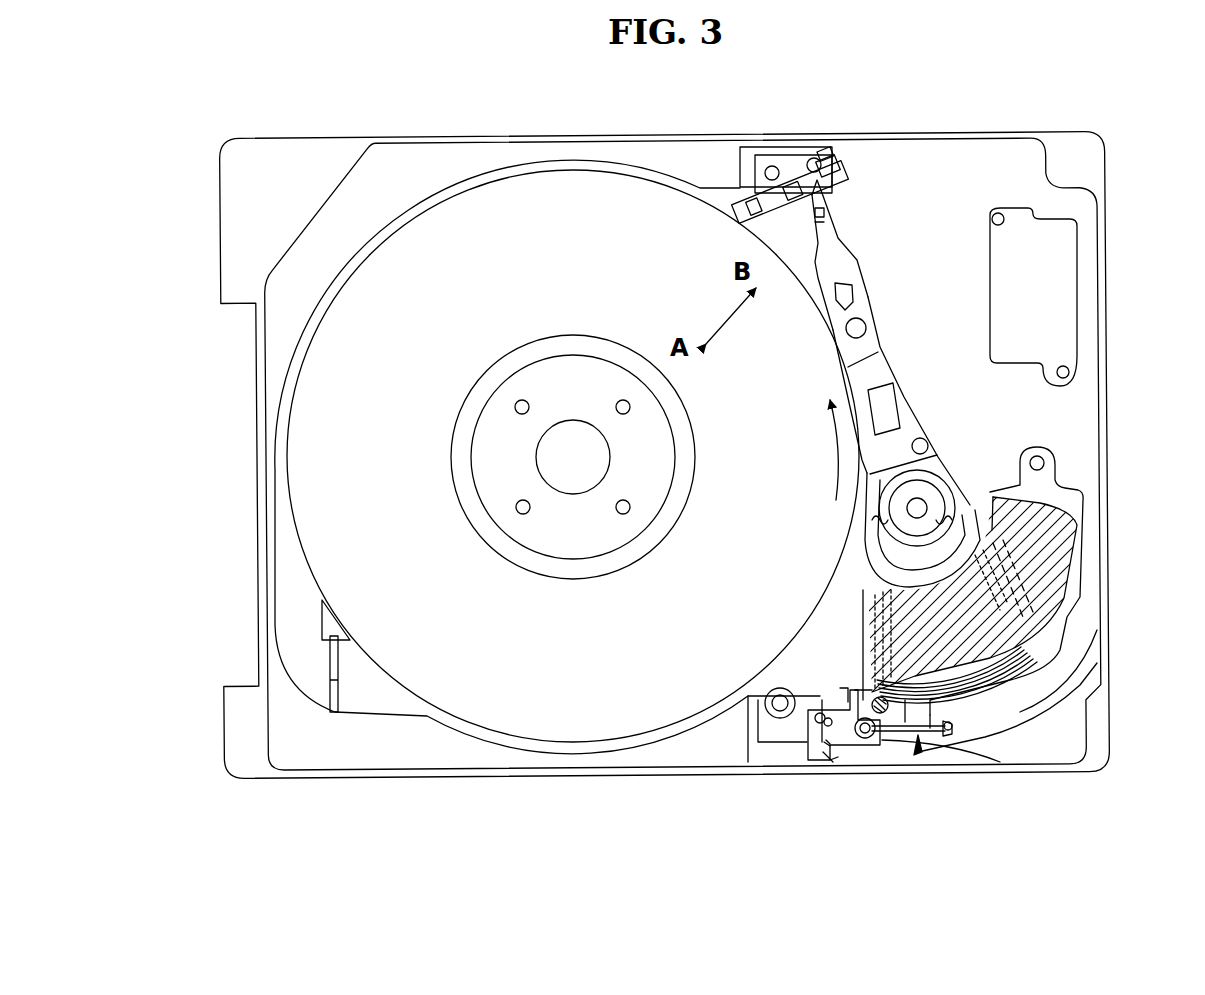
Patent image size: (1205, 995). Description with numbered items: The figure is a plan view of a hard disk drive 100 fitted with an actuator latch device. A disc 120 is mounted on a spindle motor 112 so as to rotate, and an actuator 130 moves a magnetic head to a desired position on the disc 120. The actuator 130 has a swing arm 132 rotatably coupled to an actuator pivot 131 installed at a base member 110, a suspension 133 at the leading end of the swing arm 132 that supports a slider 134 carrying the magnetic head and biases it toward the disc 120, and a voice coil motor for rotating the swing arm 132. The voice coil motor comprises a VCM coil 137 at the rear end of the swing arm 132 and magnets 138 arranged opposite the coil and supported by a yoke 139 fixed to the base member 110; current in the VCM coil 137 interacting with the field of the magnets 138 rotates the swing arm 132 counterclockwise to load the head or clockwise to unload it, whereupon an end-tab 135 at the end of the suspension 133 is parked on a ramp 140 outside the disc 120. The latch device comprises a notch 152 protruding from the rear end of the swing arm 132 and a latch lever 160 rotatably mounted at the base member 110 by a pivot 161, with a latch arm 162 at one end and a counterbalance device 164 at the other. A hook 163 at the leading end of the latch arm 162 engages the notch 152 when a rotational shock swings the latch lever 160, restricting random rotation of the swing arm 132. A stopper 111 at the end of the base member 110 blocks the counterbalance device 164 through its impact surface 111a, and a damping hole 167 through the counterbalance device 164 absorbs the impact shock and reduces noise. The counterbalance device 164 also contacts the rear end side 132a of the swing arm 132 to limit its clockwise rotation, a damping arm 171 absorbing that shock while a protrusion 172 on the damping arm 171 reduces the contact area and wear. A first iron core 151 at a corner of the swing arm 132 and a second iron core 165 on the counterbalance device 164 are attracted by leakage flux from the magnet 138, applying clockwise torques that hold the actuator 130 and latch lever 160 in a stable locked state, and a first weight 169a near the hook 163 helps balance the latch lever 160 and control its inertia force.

The hard disk drive 100 is at (198, 180).
The base member 110 is at (642, 768).
The stopper 111 is at (838, 758).
The impact surface 111a is at (820, 762).
The spindle motor 112 is at (498, 432).
The disc 120 is at (537, 185).
The actuator 130 is at (953, 440).
The actuator pivot 131 is at (918, 508).
The swing arm 132 is at (895, 400).
The rear end side of the swing arm 132a is at (882, 714).
The suspension 133 is at (835, 250).
The slider 134 is at (828, 218).
The end-tab 135 is at (816, 200).
The VCM coil 137 is at (1030, 652).
The magnet 138 is at (1070, 528).
The yoke 139 is at (1078, 497).
The ramp 140 is at (772, 188).
The first iron core 151 is at (868, 692).
The notch 152 is at (905, 715).
The latch lever 160 is at (920, 752).
The pivot 161 is at (865, 740).
The latch arm 162 is at (945, 736).
The hook 163 is at (952, 724).
The counterbalance device 164 is at (803, 712).
The second iron core 165 is at (760, 712).
The damping hole 167 is at (830, 745).
The first weight 169a is at (952, 728).
The damping arm 171 is at (825, 705).
The protrusion 172 is at (850, 698).